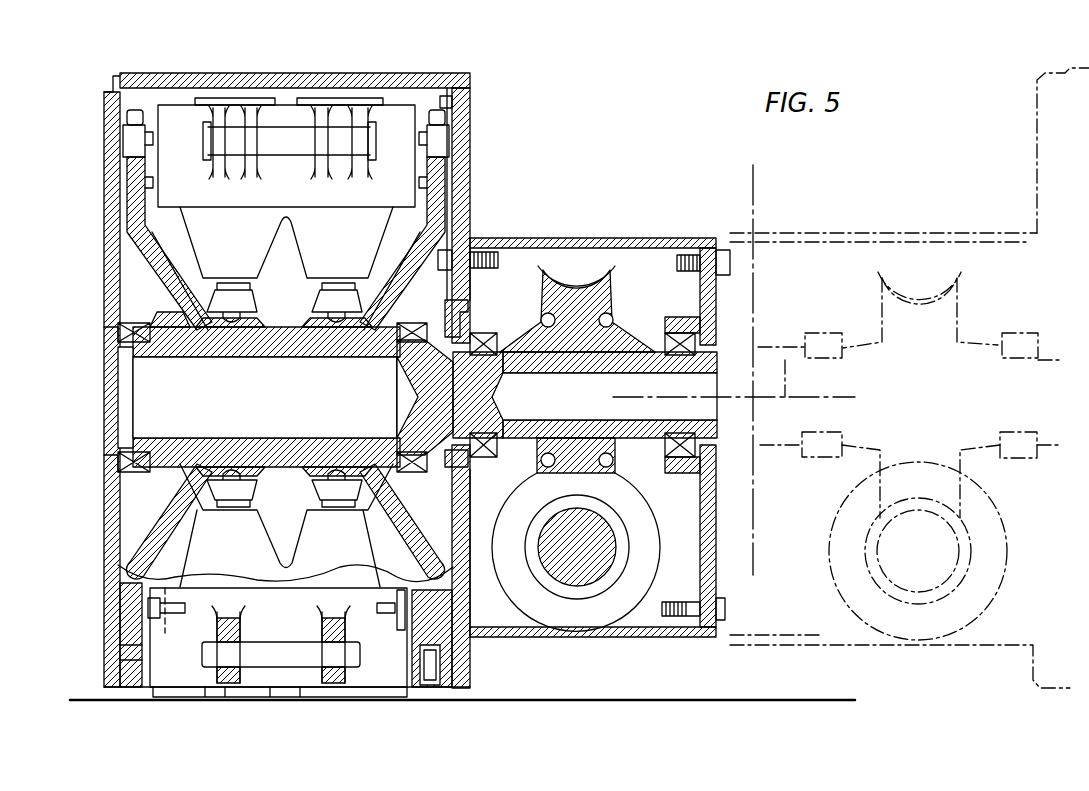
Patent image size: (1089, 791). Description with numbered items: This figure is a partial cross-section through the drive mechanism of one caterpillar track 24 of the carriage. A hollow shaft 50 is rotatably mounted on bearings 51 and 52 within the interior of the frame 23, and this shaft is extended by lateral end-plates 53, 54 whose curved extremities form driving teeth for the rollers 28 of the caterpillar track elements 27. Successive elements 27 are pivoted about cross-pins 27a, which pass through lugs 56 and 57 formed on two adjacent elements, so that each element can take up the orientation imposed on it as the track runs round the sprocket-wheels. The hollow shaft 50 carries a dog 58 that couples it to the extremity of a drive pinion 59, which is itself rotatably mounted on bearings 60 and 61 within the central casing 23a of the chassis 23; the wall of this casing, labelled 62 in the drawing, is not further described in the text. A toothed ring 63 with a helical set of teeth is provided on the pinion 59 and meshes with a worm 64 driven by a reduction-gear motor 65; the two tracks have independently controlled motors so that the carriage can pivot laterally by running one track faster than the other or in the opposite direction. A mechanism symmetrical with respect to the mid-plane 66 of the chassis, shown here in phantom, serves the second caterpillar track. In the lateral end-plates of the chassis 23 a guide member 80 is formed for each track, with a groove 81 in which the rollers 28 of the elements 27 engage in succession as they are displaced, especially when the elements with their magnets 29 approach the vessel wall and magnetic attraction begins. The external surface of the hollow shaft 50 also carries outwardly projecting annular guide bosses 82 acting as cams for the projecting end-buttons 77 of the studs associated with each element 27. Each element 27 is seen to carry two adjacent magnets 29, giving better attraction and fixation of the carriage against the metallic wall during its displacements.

The frame 23 is at (455, 187).
The central casing 23a is at (567, 237).
The caterpillar track 24 is at (445, 105).
The caterpillar track element 27 is at (385, 128).
The cross-pin 27a is at (340, 130).
The roller 28 is at (437, 130).
The magnet 29 is at (312, 102).
The hollow shaft 50 is at (197, 347).
The bearing 51 is at (157, 311).
The bearing 52 is at (392, 350).
The lateral end-plate 53 is at (152, 237).
The lateral end-plate 54 is at (420, 230).
The lug 56 is at (217, 162).
The lug 57 is at (236, 629).
The dog 58 is at (492, 393).
The drive pinion 59 is at (638, 353).
The bearing 60 is at (500, 318).
The bearing 61 is at (690, 340).
The housing wall 62 is at (710, 524).
The toothed ring 63 is at (600, 278).
The worm 64 is at (597, 537).
The reduction-gear motor 65 is at (668, 518).
The mid-plane 66 is at (757, 207).
The end-button 77 is at (330, 322).
The guide member 80 is at (150, 577).
The groove 81 is at (125, 647).
The annular guide boss 82 is at (250, 322).